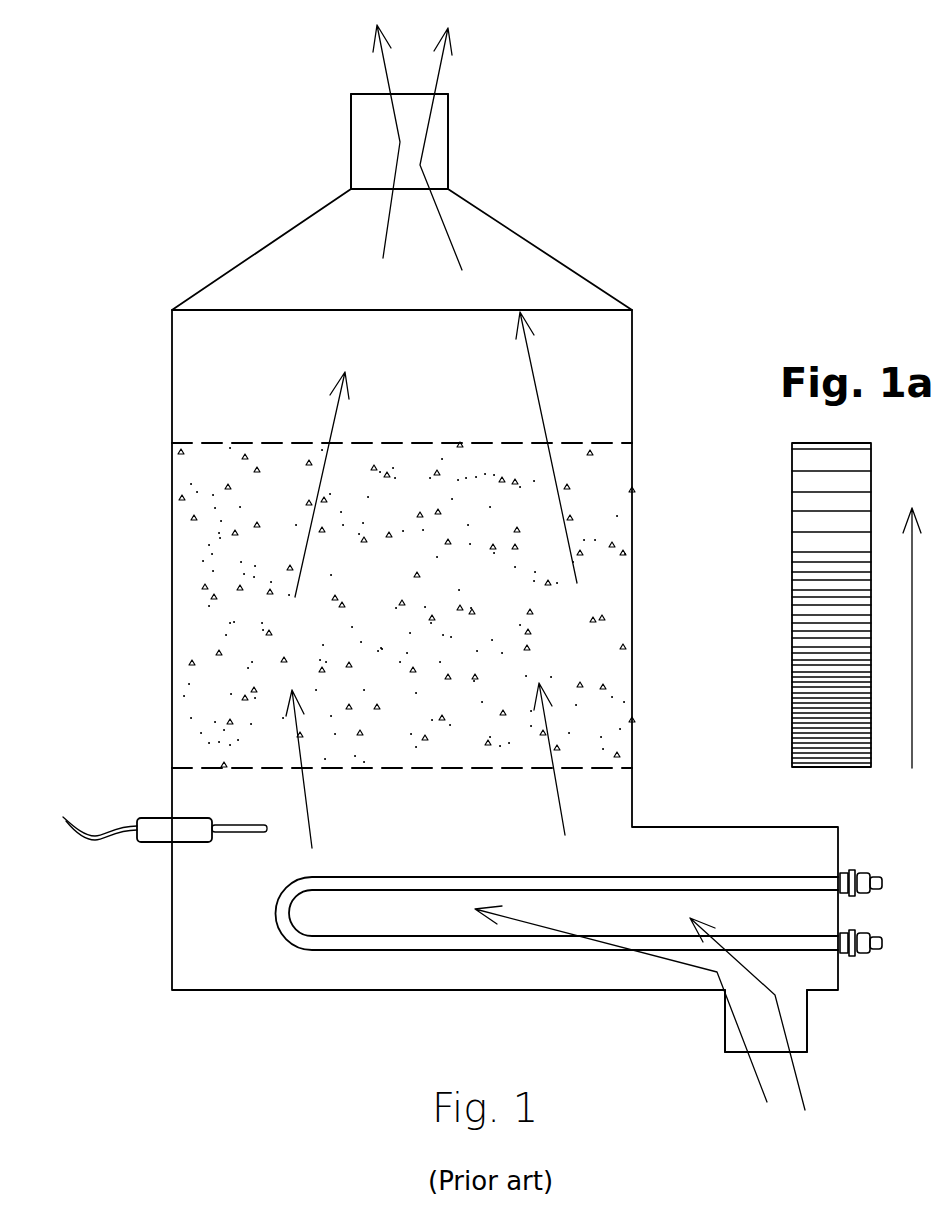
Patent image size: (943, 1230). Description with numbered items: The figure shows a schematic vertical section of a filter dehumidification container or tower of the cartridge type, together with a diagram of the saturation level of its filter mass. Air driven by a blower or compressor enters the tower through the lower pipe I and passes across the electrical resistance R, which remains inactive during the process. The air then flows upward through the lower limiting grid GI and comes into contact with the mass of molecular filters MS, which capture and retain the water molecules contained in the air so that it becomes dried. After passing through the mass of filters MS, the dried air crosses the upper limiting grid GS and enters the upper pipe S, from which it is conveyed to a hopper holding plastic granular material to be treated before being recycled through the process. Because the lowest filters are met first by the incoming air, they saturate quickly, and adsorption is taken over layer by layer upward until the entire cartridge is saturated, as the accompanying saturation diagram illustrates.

The upper pipe S is at (448, 148).
The upper limiting grid GS is at (195, 438).
The mass of molecular filters MS is at (195, 538).
The lower limiting grid GI is at (202, 767).
The electrical resistance R is at (298, 942).
The lower pipe I is at (733, 1043).